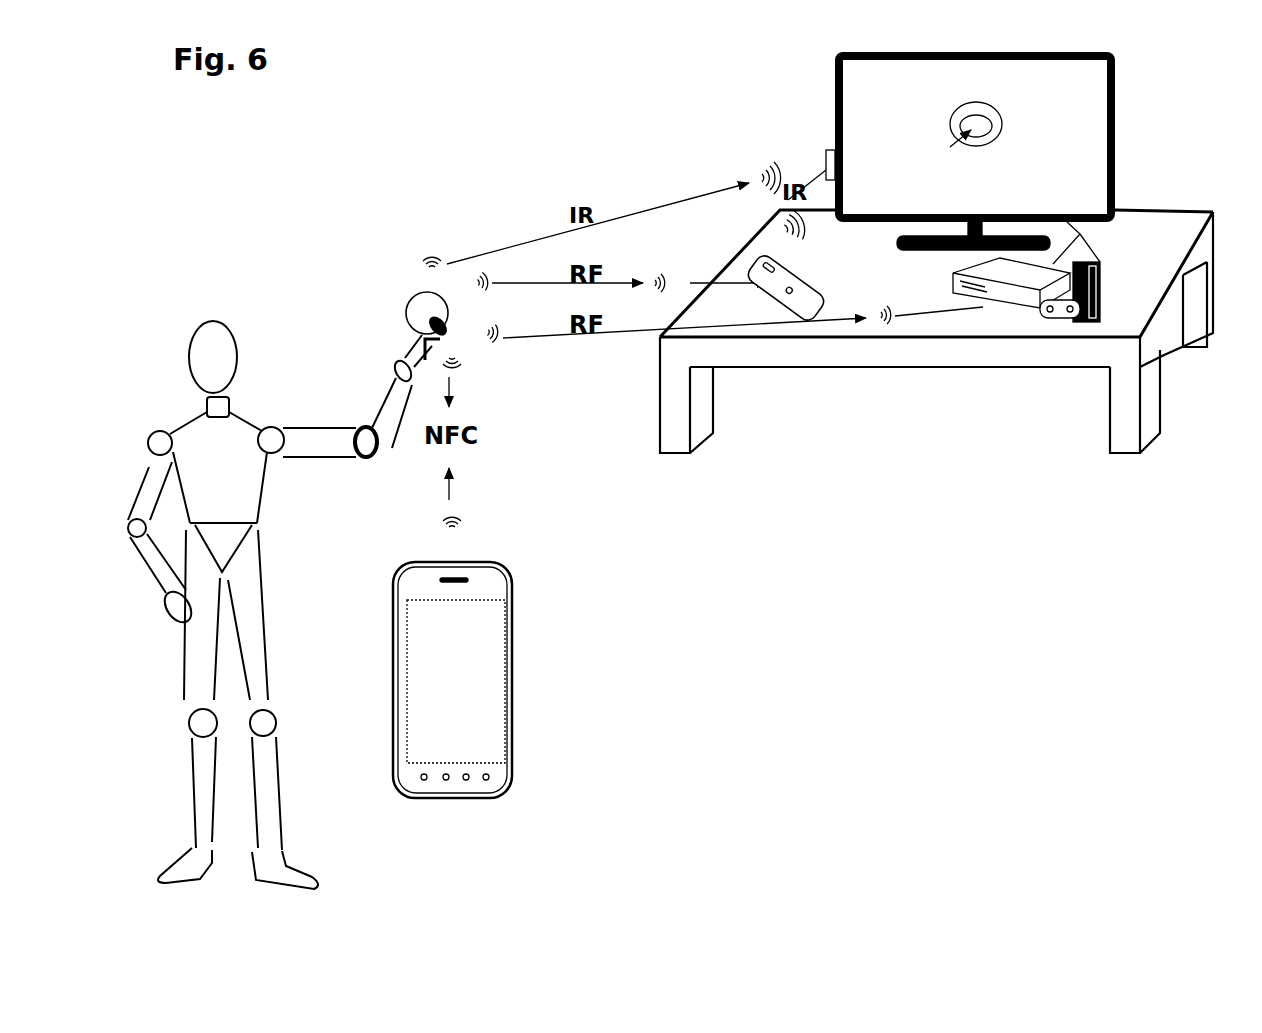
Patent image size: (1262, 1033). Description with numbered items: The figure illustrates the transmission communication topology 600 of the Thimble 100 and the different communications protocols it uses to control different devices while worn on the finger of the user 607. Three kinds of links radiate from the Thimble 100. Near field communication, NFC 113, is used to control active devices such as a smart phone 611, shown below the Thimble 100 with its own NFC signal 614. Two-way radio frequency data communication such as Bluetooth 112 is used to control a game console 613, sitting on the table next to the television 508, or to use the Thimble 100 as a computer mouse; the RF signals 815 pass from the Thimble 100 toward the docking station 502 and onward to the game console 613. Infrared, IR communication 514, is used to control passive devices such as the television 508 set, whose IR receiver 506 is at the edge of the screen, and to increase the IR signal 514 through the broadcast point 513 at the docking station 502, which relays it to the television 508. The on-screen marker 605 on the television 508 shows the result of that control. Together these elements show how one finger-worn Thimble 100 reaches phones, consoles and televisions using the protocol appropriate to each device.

The transmission communication topology 600 is at (388, 140).
The user 607 is at (183, 322).
The Thimble 100 is at (418, 312).
The IR communication 514 is at (427, 258).
The Bluetooth 112 is at (504, 282).
The NFC communication 113 is at (467, 371).
The RF signal 815 is at (644, 309).
The broadcast point 513 is at (767, 232).
The docking station 502 is at (812, 303).
The television 508 is at (1065, 123).
The IR receiver 506 is at (820, 157).
The on-screen cursor target 605 is at (937, 124).
The game console 613 is at (1018, 326).
The NFC signal 614 is at (484, 530).
The smart phone 611 is at (449, 657).